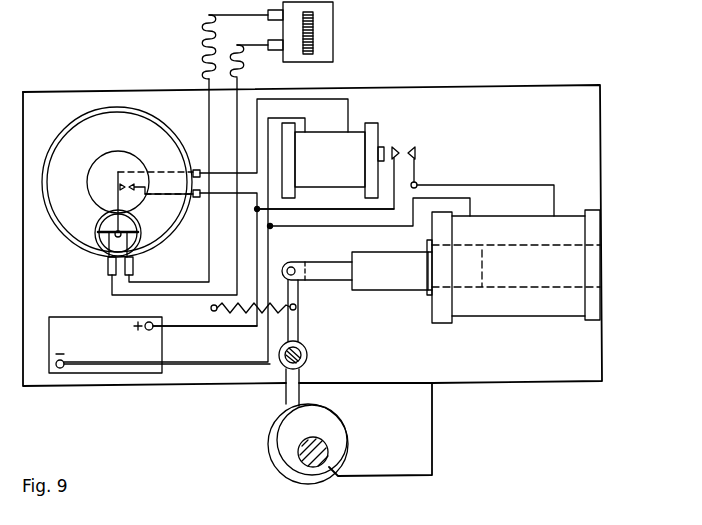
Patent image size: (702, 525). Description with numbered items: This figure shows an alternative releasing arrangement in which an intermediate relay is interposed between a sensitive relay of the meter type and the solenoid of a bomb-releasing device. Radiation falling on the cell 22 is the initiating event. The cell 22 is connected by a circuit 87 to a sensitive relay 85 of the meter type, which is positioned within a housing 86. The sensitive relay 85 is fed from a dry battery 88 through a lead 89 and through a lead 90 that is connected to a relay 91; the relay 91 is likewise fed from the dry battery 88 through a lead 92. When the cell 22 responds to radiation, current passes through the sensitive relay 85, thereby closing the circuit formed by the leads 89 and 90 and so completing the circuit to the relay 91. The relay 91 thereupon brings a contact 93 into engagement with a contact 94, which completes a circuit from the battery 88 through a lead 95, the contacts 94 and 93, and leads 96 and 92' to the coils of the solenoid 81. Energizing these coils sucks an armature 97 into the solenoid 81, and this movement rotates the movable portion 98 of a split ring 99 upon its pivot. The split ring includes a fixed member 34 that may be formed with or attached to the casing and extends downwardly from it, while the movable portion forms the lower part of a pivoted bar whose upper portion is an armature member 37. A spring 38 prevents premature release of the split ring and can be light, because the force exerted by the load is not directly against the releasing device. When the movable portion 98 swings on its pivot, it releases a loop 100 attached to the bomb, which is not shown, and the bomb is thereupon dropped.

The cell 22 is at (292, 34).
The circuit 87 is at (225, 45).
The housing 86 is at (72, 122).
The sensitive relay 85 is at (134, 205).
The lead 90 is at (270, 138).
The lead 89 is at (206, 258).
The lead 92 is at (229, 233).
The lead 92' is at (370, 222).
The relay 91 is at (333, 160).
The contact 94 is at (397, 147).
The contact 93 is at (417, 154).
The lead 95 is at (352, 208).
The lead 96 is at (528, 186).
The armature 97 is at (392, 271).
The movable portion 98 is at (299, 323).
The armature member 37 is at (308, 355).
The spring 38 is at (234, 309).
The dry battery 88 is at (159, 345).
The solenoid 81 is at (571, 215).
The split ring 99 is at (269, 440).
The fixed member 34 is at (333, 440).
The loop 100 is at (333, 452).